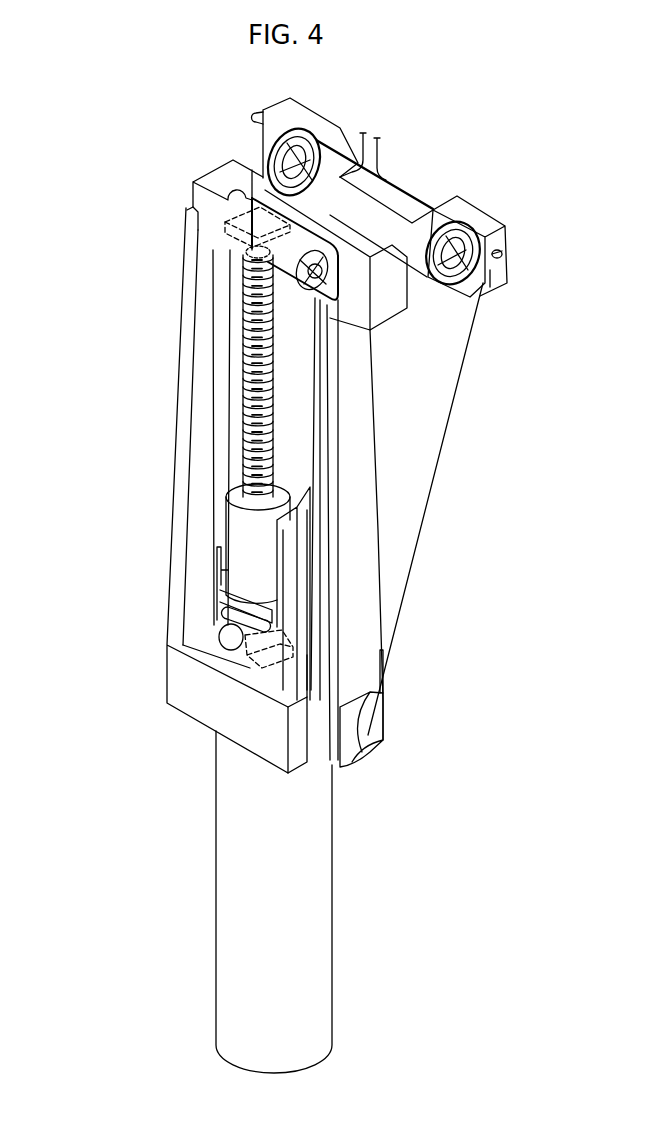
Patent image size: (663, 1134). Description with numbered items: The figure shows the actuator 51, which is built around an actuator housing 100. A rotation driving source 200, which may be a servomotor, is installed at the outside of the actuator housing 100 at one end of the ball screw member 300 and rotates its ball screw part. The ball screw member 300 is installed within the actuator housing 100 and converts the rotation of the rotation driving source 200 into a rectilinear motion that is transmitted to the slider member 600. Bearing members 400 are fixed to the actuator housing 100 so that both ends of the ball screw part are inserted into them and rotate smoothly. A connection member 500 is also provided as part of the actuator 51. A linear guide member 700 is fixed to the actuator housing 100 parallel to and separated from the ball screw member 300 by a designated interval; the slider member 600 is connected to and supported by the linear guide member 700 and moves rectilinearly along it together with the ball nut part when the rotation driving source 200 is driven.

The actuator 51 is at (490, 363).
The actuator housing 100 is at (173, 503).
The rotation driving source 200 is at (317, 856).
The ball screw member 300 is at (242, 425).
The bearing members 400 is at (252, 254).
The connection member 500 is at (221, 614).
The slider member 600 is at (293, 622).
The linear guide member 700 is at (327, 350).